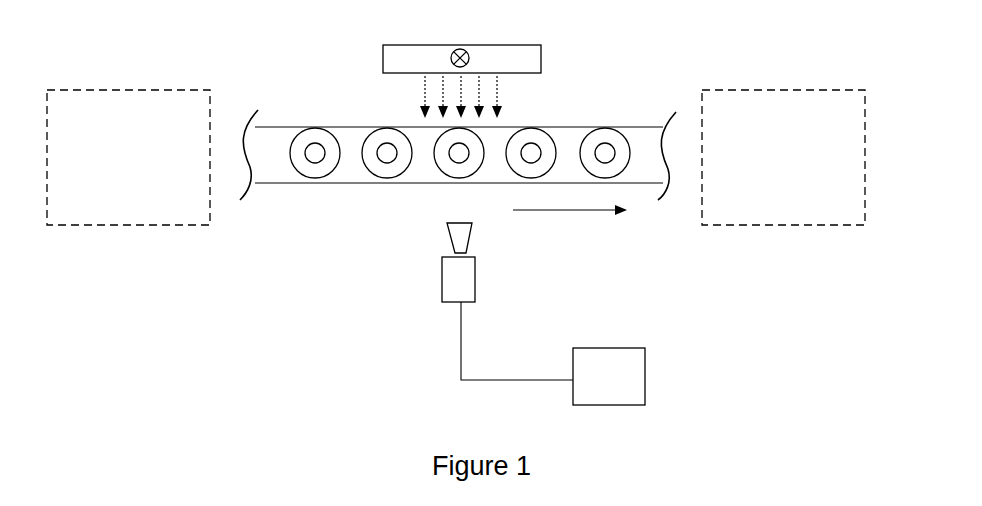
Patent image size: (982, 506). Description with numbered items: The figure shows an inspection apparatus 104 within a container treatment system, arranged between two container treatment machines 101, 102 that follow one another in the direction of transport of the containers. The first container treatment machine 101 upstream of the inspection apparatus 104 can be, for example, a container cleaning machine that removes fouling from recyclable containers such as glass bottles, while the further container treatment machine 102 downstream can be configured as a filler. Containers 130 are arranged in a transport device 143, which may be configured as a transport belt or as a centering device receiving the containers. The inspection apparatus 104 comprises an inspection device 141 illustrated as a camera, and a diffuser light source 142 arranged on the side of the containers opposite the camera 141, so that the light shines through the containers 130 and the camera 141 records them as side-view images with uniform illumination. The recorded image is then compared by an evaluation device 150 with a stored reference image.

The first container treatment machine 101 is at (102, 213).
The further container treatment machine 102 is at (738, 210).
The inspection apparatus 104 is at (541, 261).
The containers 130 is at (609, 138).
The inspection device 141 is at (452, 277).
The diffuser light source 142 is at (510, 55).
The transport device 143 is at (357, 175).
The evaluation device 150 is at (638, 378).